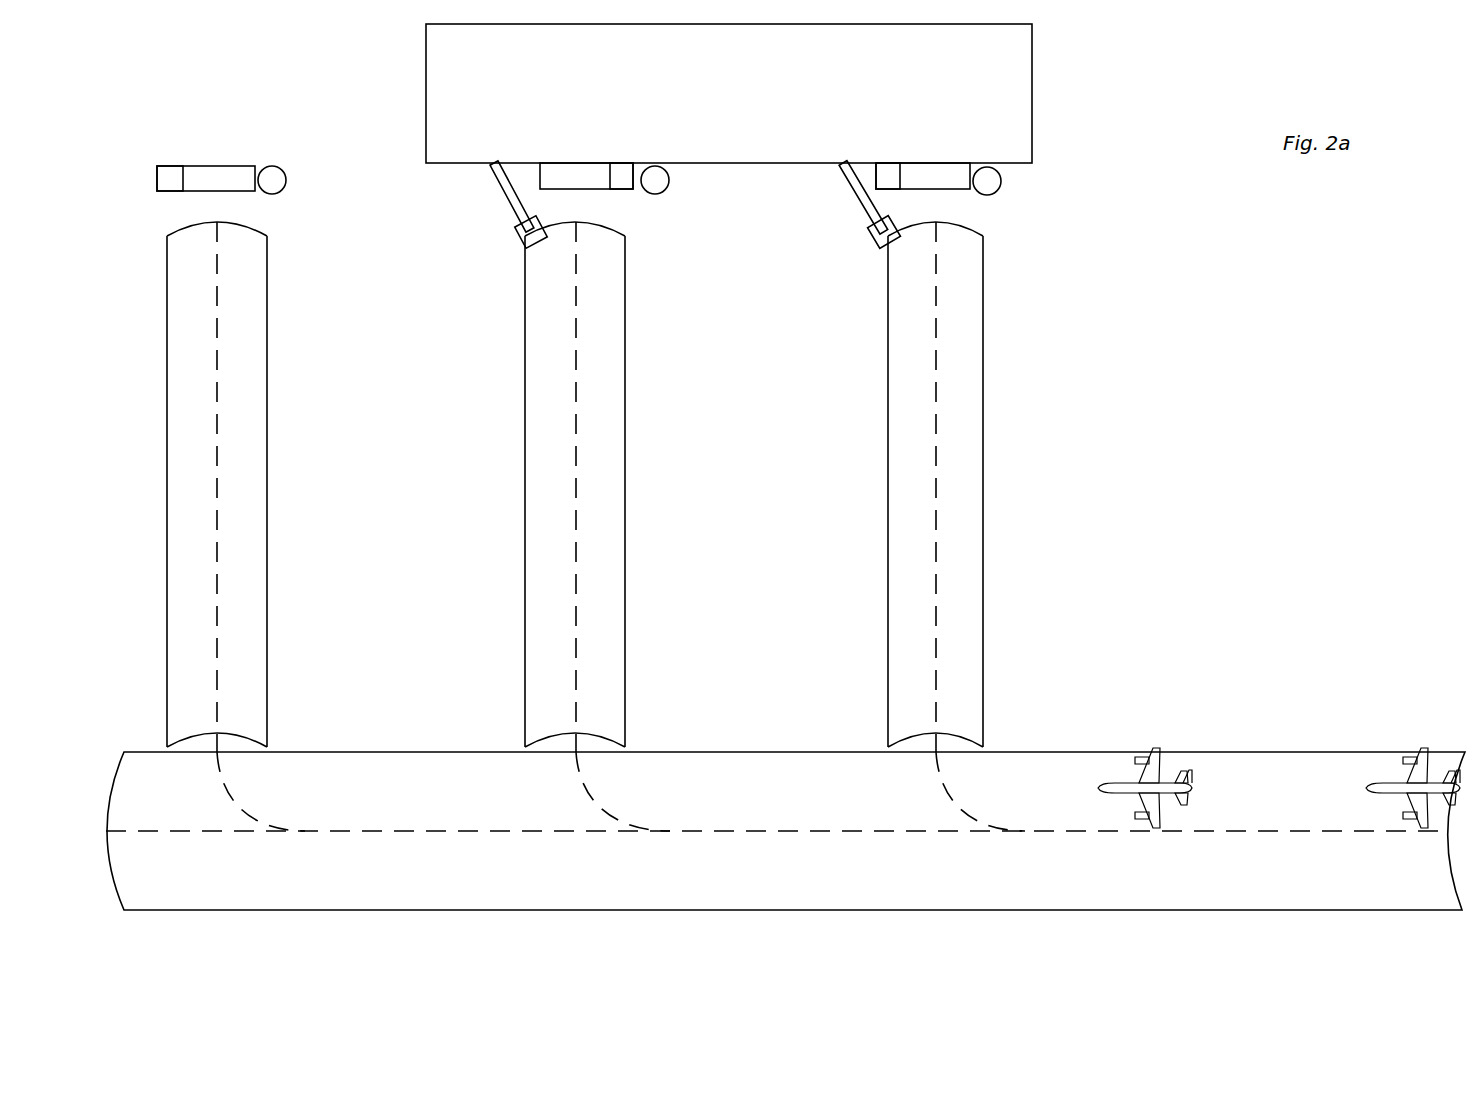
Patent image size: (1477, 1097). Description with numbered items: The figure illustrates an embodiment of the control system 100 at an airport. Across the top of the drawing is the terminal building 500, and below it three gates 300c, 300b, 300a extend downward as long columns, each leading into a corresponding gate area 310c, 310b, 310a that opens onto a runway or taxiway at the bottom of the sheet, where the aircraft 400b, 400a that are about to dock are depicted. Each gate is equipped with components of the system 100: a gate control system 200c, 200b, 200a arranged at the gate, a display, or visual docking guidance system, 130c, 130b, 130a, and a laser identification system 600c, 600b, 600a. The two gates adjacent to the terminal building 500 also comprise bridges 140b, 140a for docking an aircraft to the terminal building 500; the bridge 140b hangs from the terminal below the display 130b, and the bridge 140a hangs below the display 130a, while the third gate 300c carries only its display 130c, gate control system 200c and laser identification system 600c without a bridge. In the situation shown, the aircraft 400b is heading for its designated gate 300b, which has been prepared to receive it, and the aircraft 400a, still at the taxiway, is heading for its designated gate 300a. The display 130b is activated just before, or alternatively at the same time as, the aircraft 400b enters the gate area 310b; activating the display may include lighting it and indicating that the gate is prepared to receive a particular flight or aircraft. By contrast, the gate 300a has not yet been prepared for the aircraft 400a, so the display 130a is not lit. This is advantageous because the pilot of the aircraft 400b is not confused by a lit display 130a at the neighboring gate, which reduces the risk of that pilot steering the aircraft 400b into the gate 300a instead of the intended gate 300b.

The system 100 is at (231, 31).
The terminal building 500 is at (778, 108).
The display 130c is at (232, 166).
The laser identification system 600c is at (157, 176).
The gate control system 200c is at (286, 180).
The display 130b is at (540, 172).
The laser identification system 600b is at (620, 189).
The gate control system 200b is at (669, 190).
The bridge 140b is at (518, 237).
The display 130a is at (960, 189).
The laser identification system 600a is at (876, 175).
The gate control system 200a is at (1001, 180).
The bridge 140a is at (872, 236).
The gate 300c is at (300, 526).
The gate area 310c is at (328, 390).
The gate 300b is at (661, 526).
The gate area 310b is at (688, 376).
The gate 300a is at (1031, 526).
The gate area 310a is at (983, 487).
The aircraft 400b is at (1139, 752).
The aircraft 400a is at (1407, 752).